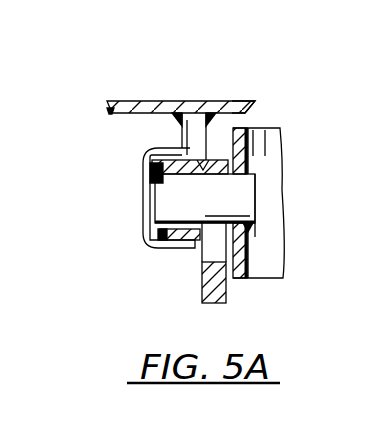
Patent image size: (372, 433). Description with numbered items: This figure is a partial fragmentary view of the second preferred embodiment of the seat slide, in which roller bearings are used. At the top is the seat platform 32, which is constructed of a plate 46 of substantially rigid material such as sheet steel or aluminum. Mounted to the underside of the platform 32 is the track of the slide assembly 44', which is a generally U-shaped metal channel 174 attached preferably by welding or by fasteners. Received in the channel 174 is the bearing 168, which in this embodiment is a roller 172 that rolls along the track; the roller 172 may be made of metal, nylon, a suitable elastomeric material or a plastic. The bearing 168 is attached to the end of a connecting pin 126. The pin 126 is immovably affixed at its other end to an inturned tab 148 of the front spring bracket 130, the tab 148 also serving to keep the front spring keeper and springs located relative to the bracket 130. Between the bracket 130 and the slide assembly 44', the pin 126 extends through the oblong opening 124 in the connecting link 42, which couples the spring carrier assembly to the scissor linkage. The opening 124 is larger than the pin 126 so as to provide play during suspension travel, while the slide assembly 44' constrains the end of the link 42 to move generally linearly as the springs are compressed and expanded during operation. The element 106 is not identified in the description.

The platform 32 is at (117, 92).
The plate 46 is at (233, 101).
The bearing 168 is at (200, 145).
The bracket channel 106 is at (136, 202).
The roller 172 is at (150, 164).
The connecting pin 126 is at (250, 192).
The U-shaped metal channel 174 is at (174, 251).
The oblong opening 124 is at (208, 258).
The connecting link 42 is at (218, 303).
The front spring bracket 130 is at (273, 156).
The inturned tab 148 is at (250, 127).
The fastener assembly 44' is at (96, 260).